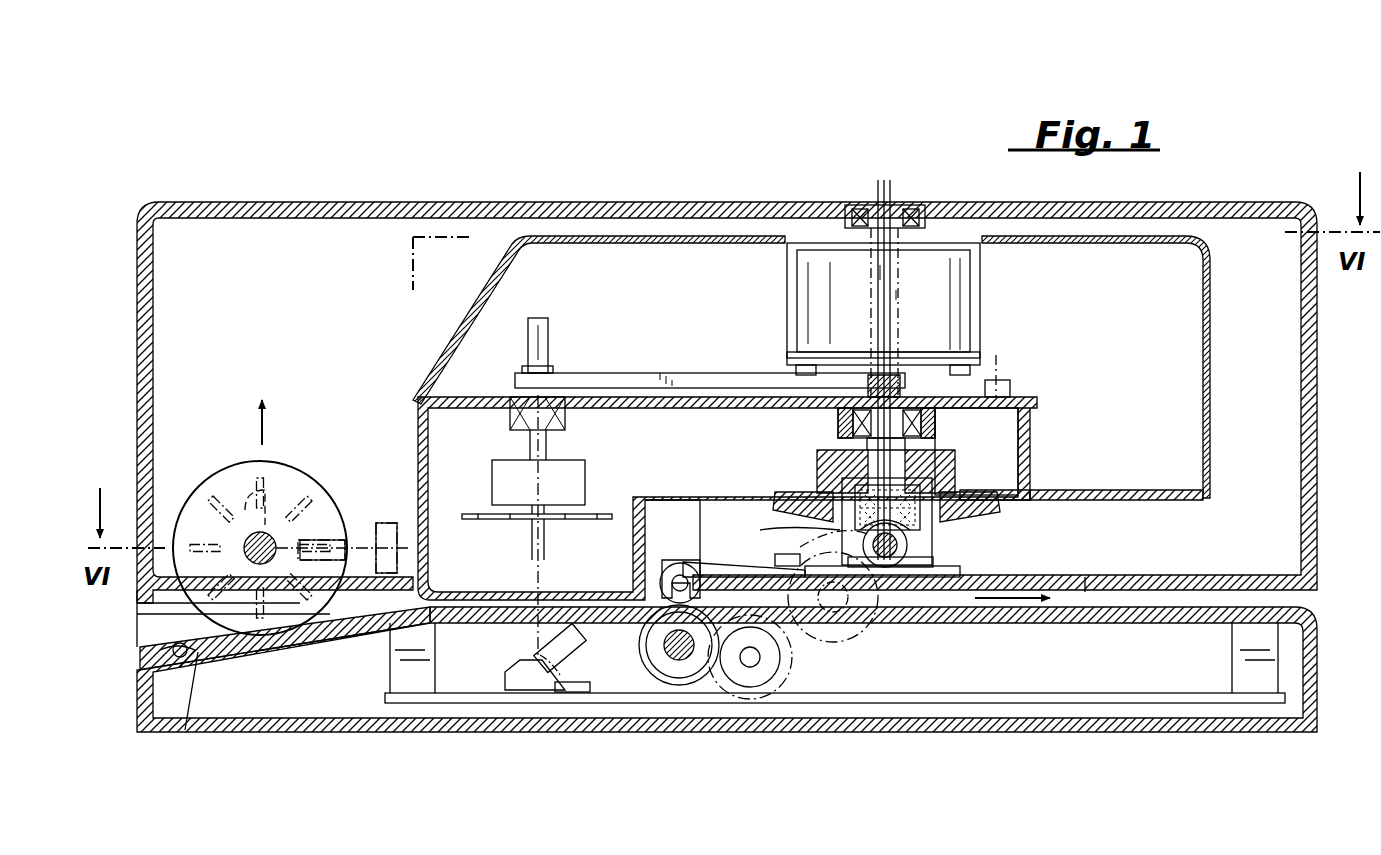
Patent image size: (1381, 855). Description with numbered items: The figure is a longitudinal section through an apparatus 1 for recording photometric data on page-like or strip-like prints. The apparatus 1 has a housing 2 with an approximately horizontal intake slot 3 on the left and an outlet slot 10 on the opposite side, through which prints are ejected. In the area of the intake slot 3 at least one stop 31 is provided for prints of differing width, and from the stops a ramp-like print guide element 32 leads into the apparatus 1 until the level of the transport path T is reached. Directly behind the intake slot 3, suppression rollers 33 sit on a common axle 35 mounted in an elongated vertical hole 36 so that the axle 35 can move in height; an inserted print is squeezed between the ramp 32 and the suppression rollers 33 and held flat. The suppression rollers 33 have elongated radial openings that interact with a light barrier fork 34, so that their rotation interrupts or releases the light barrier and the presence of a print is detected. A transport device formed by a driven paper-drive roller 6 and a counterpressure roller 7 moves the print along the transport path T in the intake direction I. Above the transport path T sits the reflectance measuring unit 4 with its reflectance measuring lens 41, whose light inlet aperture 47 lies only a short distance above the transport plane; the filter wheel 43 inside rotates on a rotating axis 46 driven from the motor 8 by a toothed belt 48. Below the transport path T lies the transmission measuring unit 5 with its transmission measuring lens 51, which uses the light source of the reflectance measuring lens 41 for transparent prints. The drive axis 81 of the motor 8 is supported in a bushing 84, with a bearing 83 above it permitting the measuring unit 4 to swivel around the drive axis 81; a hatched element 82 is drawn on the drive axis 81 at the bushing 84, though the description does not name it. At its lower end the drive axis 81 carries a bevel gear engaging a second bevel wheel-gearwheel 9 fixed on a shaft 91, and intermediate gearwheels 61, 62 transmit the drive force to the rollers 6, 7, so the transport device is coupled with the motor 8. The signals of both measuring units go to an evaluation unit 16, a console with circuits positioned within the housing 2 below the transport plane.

The apparatus 1 is at (196, 200).
The housing 2 is at (1312, 326).
The intake slot 3 is at (148, 598).
The reflectance measuring unit 4 is at (416, 436).
The transmission measuring unit 5 is at (612, 670).
The paper-drive roller 6 is at (682, 660).
The counterpressure roller 7 is at (680, 580).
The motor 8 is at (955, 300).
The second bevel wheel-gearwheel 9 is at (935, 548).
The outlet slot 10 is at (1298, 600).
The evaluation unit 16 is at (925, 690).
The stop 31 is at (175, 648).
The print guide element 32 is at (190, 655).
The suppression rollers 33 is at (238, 485).
The light barrier fork 34 is at (325, 538).
The axle 35 is at (268, 538).
The vertical hole 36 is at (273, 490).
The reflectance measuring lens 41 is at (490, 488).
The filter wheel 43 is at (512, 521).
The rotating axis 46 is at (542, 345).
The light inlet aperture 47 is at (545, 610).
The toothed belt 48 is at (720, 383).
The transmission measuring lens 51 is at (530, 648).
The intermediate gearwheel 61 is at (727, 685).
The intermediate gearwheel 62 is at (855, 625).
The drive axis 81 is at (892, 396).
The disc hub 82 is at (995, 512).
The bearing 83 is at (935, 420).
The bushing 84 is at (840, 522).
The shaft 91 is at (898, 562).
The intake direction I is at (1038, 602).
The transport path T is at (1087, 603).